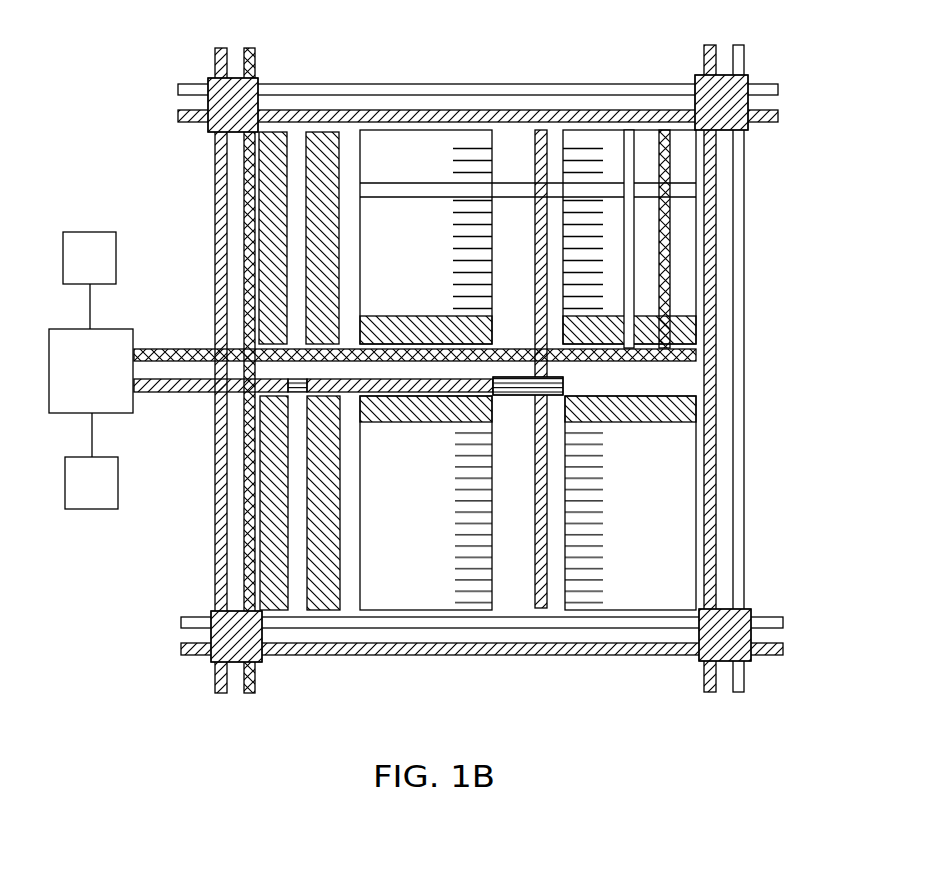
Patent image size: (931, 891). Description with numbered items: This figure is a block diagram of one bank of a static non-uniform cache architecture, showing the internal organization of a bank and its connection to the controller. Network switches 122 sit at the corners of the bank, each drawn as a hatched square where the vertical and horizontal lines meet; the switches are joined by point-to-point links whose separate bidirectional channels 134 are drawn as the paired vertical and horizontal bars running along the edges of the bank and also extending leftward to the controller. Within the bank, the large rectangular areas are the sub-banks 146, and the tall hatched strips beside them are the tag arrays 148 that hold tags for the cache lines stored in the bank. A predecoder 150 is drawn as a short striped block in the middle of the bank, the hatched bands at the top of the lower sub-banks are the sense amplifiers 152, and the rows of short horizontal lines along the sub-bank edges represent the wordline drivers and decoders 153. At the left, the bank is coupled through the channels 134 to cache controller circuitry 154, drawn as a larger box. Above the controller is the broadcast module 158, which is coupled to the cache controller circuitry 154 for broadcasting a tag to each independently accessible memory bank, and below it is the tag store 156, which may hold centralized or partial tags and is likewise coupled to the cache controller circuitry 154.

The switch 122 is at (210, 80).
The channel 134 is at (250, 47).
The sub-bank 146 is at (428, 130).
The tag array 148 is at (322, 132).
The predecoder 150 is at (563, 375).
The sense amplifiers 152 is at (420, 422).
The wordline drivers and decoders 153 is at (455, 286).
The cache controller circuitry 154 is at (76, 329).
The tag store 156 is at (92, 509).
The broadcast module 158 is at (90, 231).